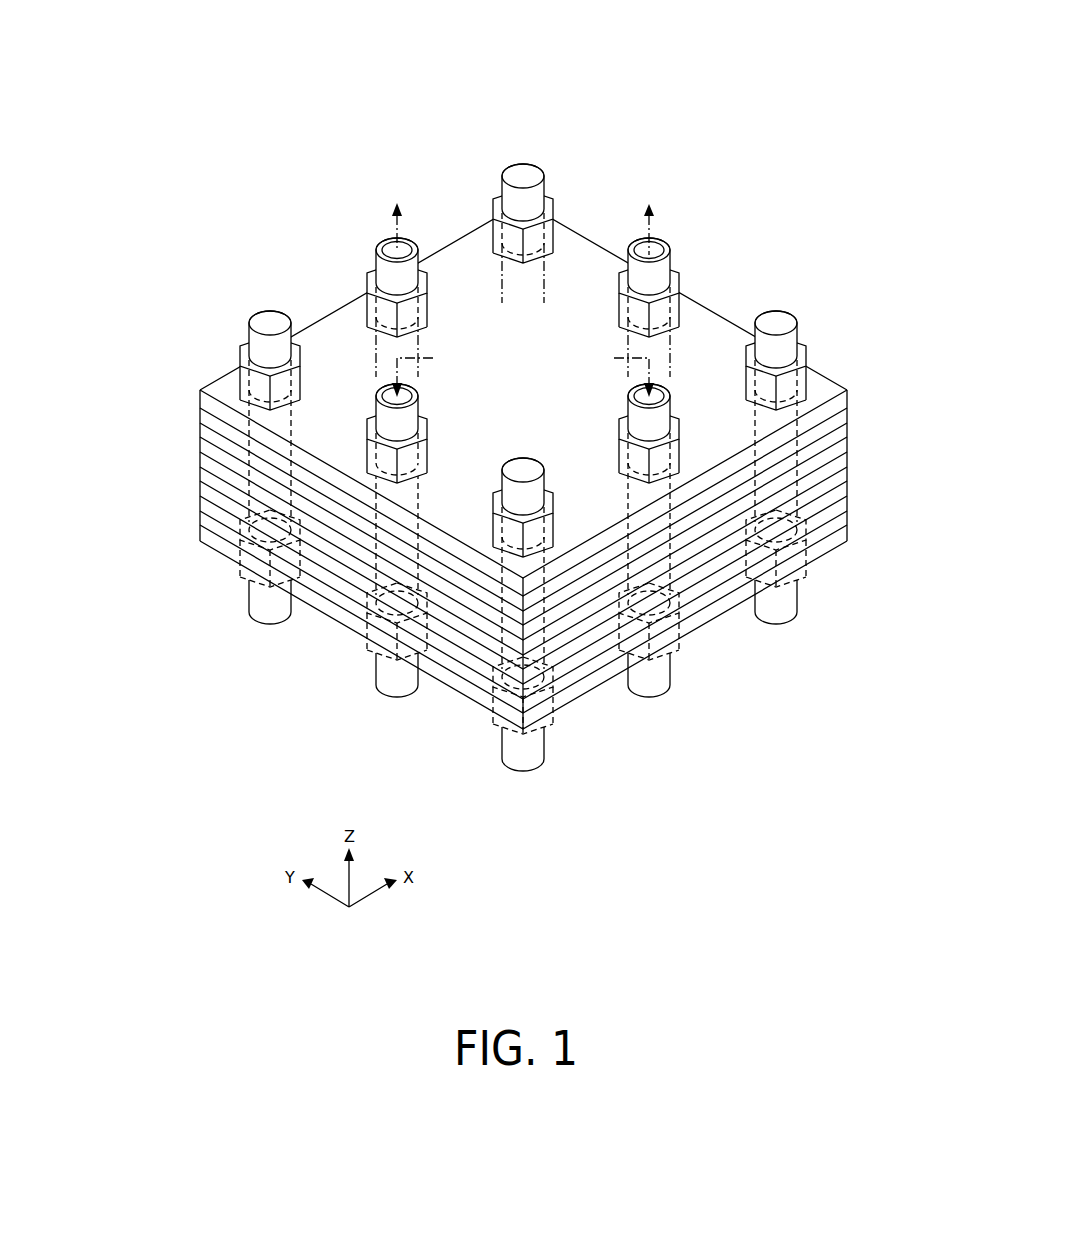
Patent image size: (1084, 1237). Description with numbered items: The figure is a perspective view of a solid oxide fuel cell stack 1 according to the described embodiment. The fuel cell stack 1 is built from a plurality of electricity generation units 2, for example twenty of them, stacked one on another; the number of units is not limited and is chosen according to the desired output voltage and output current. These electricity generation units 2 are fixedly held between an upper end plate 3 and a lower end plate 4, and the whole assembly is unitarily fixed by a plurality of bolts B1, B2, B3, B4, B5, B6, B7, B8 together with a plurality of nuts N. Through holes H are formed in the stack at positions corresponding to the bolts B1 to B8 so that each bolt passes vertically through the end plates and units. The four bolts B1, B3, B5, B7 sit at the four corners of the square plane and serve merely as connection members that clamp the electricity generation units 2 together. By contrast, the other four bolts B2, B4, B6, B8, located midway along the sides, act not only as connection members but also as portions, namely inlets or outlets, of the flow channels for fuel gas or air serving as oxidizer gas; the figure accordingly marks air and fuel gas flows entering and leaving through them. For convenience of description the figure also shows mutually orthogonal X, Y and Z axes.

The solid oxide fuel cell stack 1 is at (488, 67).
The electricity generation unit 2 is at (203, 416).
The upper end plate 3 is at (203, 400).
The lower end plate 4 is at (203, 536).
The bolt B1 is at (541, 190).
The bolt B2 is at (665, 265).
The bolt B3 is at (795, 337).
The bolt B4 is at (668, 408).
The bolt B5 is at (541, 488).
The bolt B6 is at (412, 408).
The bolt B7 is at (290, 345).
The bolt B8 is at (383, 262).
The through hole H is at (500, 279).
The nut N is at (495, 228).